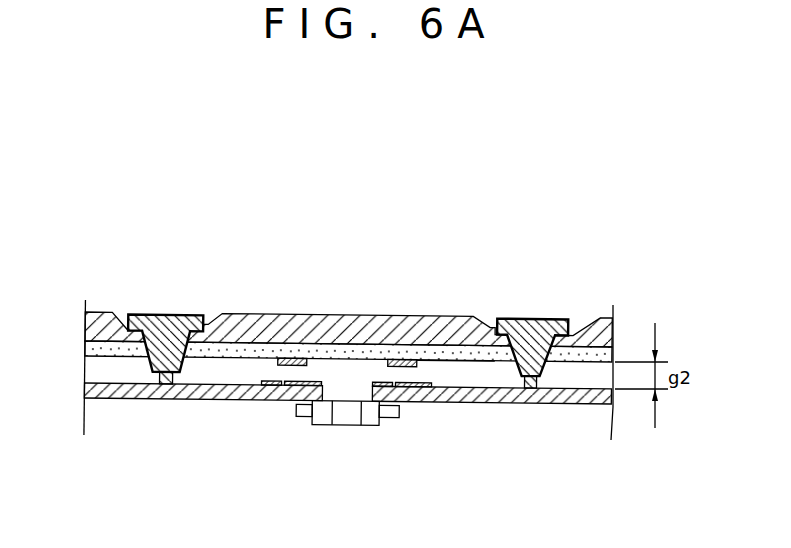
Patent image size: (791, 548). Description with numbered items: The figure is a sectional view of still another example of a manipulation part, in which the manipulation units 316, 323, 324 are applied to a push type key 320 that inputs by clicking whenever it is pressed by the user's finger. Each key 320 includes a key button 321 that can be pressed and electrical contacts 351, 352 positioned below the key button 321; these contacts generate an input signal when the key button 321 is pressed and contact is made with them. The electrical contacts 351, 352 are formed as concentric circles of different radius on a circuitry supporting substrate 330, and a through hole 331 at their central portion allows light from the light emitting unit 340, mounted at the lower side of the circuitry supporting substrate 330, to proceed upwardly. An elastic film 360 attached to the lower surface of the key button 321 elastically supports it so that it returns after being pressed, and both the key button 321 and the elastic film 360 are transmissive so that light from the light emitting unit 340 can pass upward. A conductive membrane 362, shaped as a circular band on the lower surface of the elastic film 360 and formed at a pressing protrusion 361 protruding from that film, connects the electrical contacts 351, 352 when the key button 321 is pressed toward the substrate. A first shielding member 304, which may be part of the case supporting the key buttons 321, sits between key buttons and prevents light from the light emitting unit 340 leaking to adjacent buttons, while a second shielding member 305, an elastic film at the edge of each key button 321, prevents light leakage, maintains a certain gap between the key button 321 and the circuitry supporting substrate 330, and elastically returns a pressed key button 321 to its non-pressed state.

The display unit 316 is at (349, 231).
The window member 323 is at (348, 269).
The touch panel 324 is at (348, 269).
The push type key 320 is at (424, 300).
The key button 321 is at (98, 313).
The first shielding member 304 is at (167, 313).
The second shielding member 305 is at (163, 378).
The elastic film 360 is at (215, 350).
The pressing protrusion 361 is at (445, 366).
The conductive membrane 362 is at (420, 370).
The circuitry supporting substrate 330 is at (613, 407).
The electrical contact 351 is at (268, 384).
The electrical contact 352 is at (314, 387).
The through hole 331 is at (333, 423).
The light emitting unit 340 is at (372, 413).